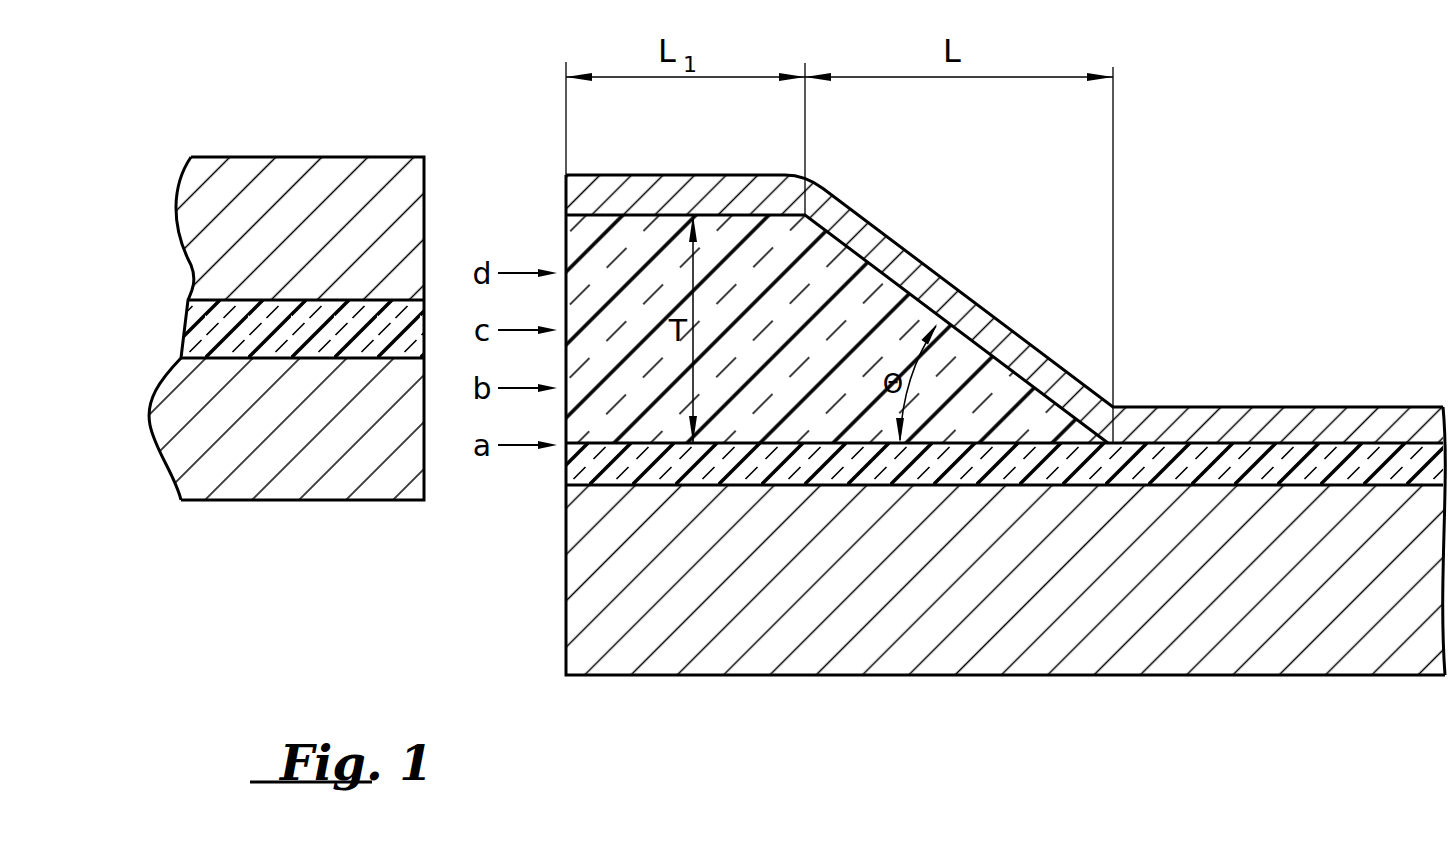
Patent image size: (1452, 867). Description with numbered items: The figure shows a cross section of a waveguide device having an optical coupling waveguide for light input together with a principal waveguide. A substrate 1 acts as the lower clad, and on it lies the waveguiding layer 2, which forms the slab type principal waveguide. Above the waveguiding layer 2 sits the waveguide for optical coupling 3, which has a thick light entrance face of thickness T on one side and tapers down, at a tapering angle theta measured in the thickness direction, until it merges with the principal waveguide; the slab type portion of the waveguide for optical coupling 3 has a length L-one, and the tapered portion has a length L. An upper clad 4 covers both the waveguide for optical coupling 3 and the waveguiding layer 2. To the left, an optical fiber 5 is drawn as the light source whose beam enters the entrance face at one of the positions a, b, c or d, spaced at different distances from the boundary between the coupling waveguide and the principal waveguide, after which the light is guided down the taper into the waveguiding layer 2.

The substrate 1 is at (1078, 655).
The waveguiding layer 2 is at (1150, 457).
The waveguide for optical coupling 3 is at (868, 285).
The upper clad 4 is at (1260, 420).
The optical fiber 5 is at (290, 176).